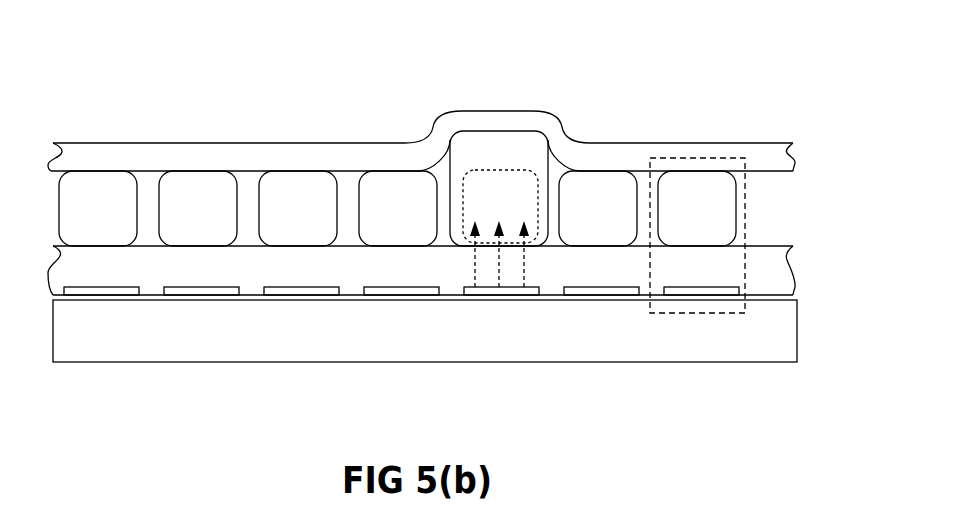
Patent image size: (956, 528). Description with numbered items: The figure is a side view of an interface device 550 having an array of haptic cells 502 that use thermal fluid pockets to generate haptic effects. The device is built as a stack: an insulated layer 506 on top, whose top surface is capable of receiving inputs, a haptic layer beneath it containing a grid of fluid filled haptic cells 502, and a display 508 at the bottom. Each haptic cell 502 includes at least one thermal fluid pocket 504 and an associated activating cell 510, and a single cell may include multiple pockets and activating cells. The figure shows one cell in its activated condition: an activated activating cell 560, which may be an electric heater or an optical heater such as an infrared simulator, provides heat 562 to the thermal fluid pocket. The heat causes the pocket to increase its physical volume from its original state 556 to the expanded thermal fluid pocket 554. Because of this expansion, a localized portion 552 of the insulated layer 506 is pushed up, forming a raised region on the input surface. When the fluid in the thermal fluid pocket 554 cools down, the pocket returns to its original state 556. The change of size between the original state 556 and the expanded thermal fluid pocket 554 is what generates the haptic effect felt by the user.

The interface device 550 is at (181, 62).
The haptic cell 502 is at (745, 202).
The thermal fluid pocket 504 is at (697, 208).
The insulated layer 506 is at (421, 157).
The display 508 is at (425, 331).
The activating cell 510 is at (718, 287).
The localized portion 552 is at (440, 133).
The activated thermal fluid pocket 554 is at (499, 188).
The original state of thermal fluid pocket 556 is at (527, 188).
The activated activating cell 560 is at (505, 295).
The heat 562 is at (527, 263).